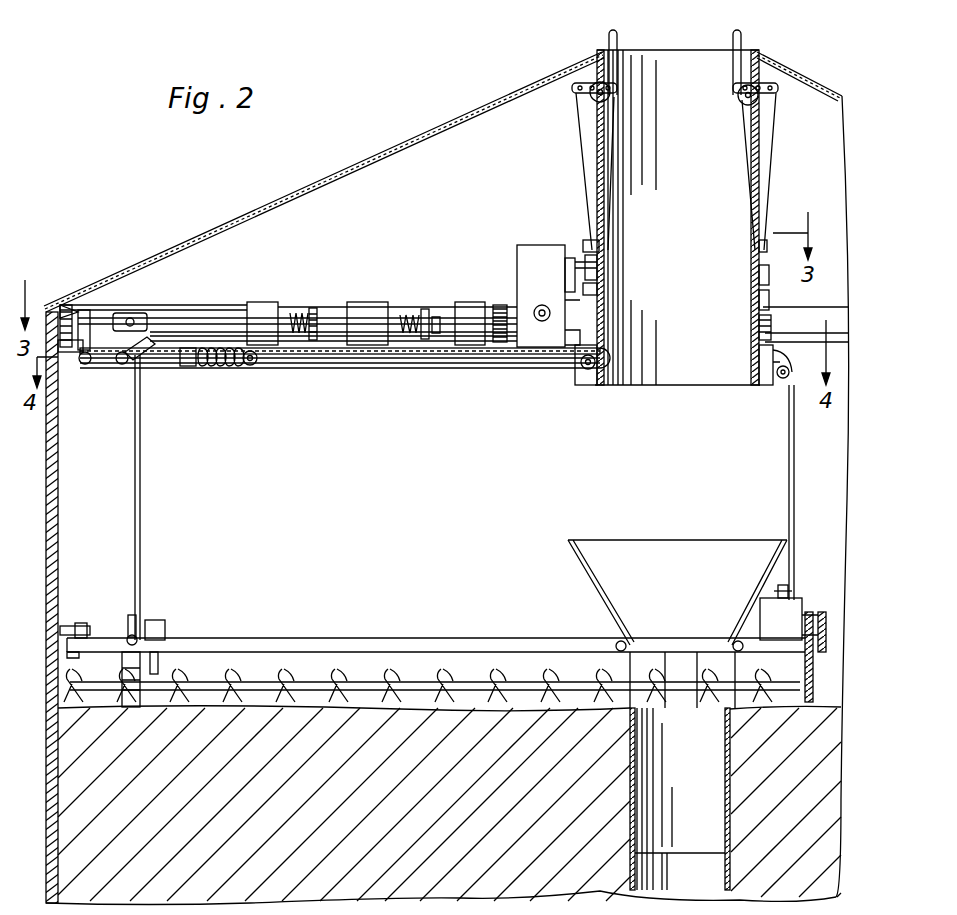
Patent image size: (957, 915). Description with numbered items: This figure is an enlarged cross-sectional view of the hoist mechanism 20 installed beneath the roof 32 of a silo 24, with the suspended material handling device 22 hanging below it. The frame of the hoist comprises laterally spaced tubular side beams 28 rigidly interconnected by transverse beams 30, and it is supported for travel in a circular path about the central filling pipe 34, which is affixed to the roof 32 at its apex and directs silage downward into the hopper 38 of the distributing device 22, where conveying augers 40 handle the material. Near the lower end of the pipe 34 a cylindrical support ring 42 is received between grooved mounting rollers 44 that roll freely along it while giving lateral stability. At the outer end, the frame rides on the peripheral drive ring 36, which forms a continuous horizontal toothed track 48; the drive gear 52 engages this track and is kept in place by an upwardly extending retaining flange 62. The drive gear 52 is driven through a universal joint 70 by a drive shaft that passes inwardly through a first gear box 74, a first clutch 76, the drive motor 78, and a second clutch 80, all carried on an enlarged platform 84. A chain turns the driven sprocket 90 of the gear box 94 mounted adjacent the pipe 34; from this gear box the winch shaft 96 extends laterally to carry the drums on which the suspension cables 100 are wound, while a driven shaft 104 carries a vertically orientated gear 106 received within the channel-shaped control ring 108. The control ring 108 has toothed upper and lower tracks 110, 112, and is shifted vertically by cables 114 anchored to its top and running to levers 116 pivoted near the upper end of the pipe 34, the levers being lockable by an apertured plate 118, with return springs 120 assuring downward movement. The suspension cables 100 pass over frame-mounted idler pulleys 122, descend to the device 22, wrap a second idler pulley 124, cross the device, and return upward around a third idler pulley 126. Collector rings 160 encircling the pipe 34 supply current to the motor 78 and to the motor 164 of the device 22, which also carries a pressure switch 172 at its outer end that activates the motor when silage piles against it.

The hoist mechanism 20 is at (490, 140).
The suspended material handling device 22 is at (366, 632).
The storage structure 24 is at (66, 558).
The side beams 28 is at (325, 364).
The transverse beams 30 is at (252, 366).
The roof 32 is at (402, 148).
The central flue or filling pipe 34 is at (758, 192).
The peripheral drive ring 36 is at (64, 362).
The hopper 38 is at (634, 556).
The conveying augers 40 is at (518, 664).
The cylindrical support ring 42 is at (600, 360).
The mounting rollers 44 is at (770, 382).
The toothed track 48 is at (56, 305).
The drive gear 52 is at (79, 305).
The retaining flange 62 is at (92, 318).
The universal joint 70 is at (150, 318).
The first gear box 74 is at (252, 302).
The first clutch 76 is at (313, 300).
The drive motor 78 is at (370, 302).
The second clutch 80 is at (421, 298).
The platform 84 is at (432, 364).
The driven sprocket 90 is at (498, 305).
The gear box 94 is at (522, 245).
The winch shaft 96 is at (542, 305).
The suspension cables 100 is at (142, 460).
The driven shaft 104 is at (600, 290).
The gear 106 is at (600, 270).
The control ring 108 is at (603, 245).
The upper track 110 is at (760, 258).
The lower track 112 is at (760, 276).
The cables 114 is at (588, 166).
The lever 116 is at (736, 40).
The apertured plate 118 is at (745, 100).
The return springs 120 is at (762, 292).
The idler pulleys 122 is at (150, 357).
The second idler pulley 124 is at (148, 632).
The third idler pulley 126 is at (776, 590).
The collector rings 160 is at (762, 325).
The motor 164 is at (795, 605).
The pressure switch 172 is at (165, 648).